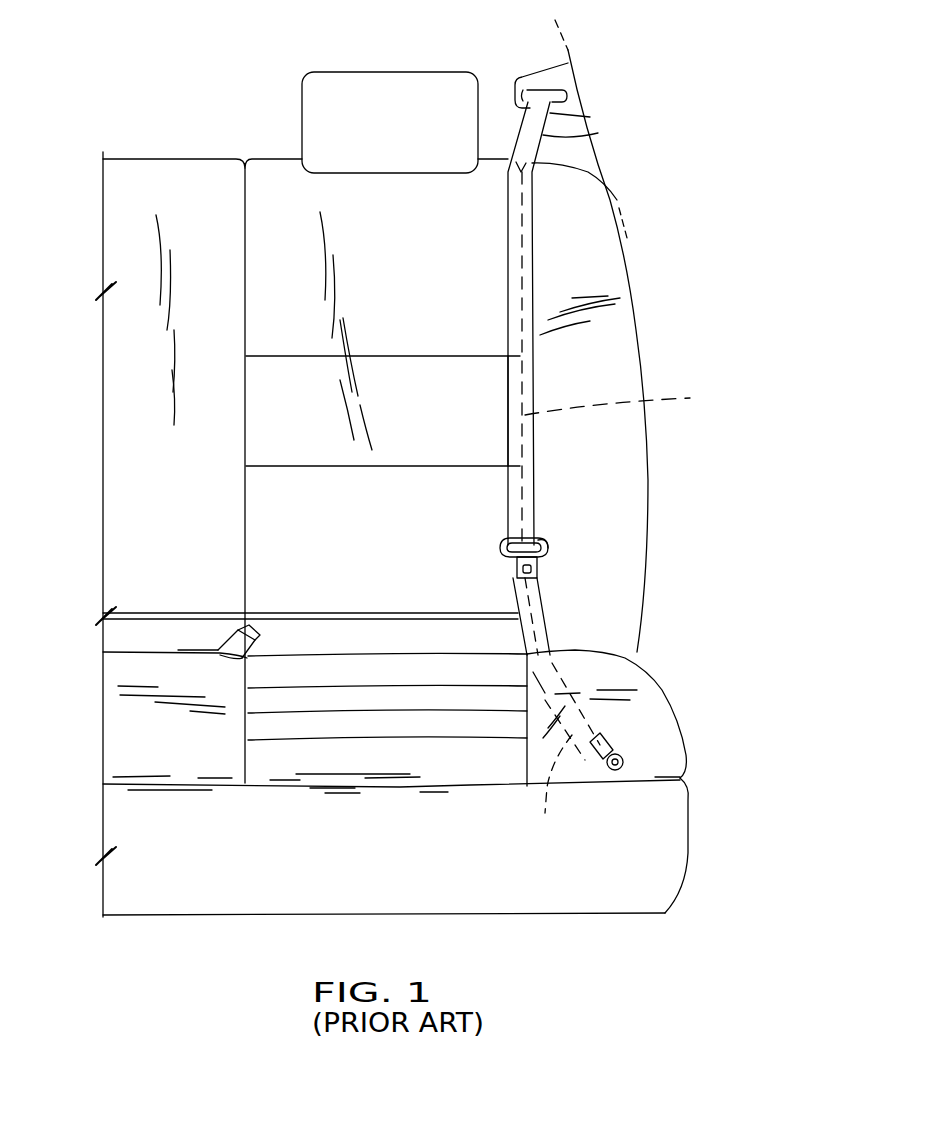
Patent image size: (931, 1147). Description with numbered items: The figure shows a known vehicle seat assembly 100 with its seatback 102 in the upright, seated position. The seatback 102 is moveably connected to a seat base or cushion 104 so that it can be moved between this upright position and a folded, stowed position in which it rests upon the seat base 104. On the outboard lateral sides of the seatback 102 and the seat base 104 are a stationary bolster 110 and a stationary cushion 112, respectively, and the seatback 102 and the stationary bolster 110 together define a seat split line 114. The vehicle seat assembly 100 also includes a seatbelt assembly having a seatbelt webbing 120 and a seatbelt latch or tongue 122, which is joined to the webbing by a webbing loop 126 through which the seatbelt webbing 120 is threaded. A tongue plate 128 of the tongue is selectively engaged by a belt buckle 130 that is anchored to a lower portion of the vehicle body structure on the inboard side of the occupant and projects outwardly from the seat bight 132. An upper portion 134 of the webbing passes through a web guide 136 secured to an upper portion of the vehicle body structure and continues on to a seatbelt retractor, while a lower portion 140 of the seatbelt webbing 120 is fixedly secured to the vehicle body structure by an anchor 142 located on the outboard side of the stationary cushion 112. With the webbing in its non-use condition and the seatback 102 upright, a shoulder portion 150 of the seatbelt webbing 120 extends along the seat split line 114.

The vehicle seat assembly 100 is at (678, 362).
The seatback 102 is at (272, 185).
The seat base 104 is at (396, 762).
The stationary bolster 110 is at (630, 477).
The stationary cushion 112 is at (647, 720).
The seat split line 114 is at (631, 401).
The seatbelt webbing 120 is at (505, 288).
The seatbelt latch or tongue 122 is at (548, 546).
The webbing loop 126 is at (542, 545).
The tongue plate 128 is at (538, 568).
The belt buckle 130 is at (228, 630).
The seat bight 132 is at (178, 650).
The upper portion of the webbing 134 is at (598, 133).
The web guide 136 is at (545, 77).
The lower portion of the webbing 140 is at (562, 755).
The anchor 142 is at (600, 767).
The shoulder portion of the seatbelt webbing 150 is at (505, 390).